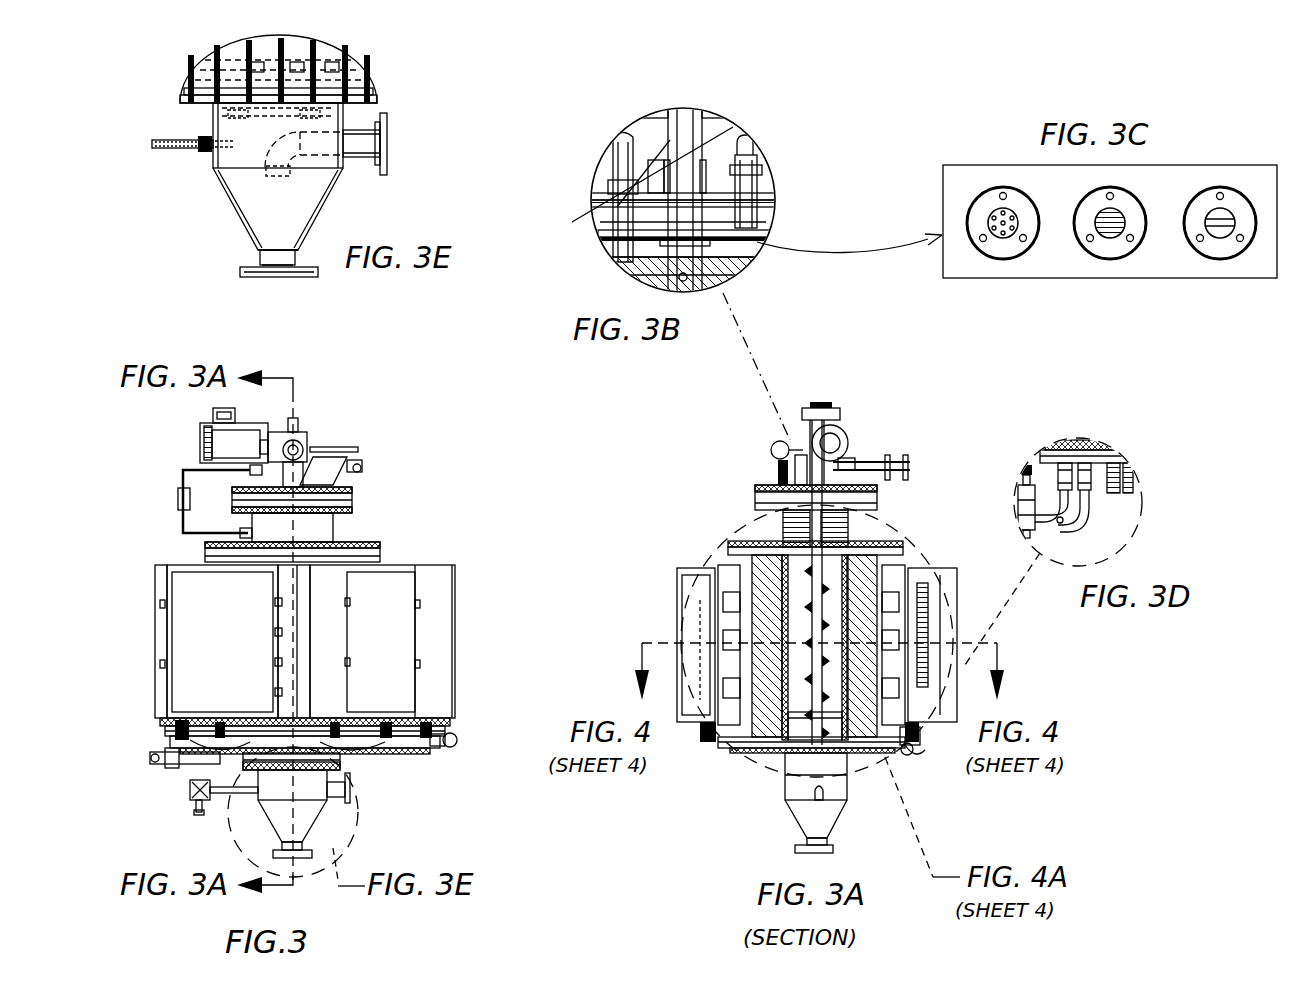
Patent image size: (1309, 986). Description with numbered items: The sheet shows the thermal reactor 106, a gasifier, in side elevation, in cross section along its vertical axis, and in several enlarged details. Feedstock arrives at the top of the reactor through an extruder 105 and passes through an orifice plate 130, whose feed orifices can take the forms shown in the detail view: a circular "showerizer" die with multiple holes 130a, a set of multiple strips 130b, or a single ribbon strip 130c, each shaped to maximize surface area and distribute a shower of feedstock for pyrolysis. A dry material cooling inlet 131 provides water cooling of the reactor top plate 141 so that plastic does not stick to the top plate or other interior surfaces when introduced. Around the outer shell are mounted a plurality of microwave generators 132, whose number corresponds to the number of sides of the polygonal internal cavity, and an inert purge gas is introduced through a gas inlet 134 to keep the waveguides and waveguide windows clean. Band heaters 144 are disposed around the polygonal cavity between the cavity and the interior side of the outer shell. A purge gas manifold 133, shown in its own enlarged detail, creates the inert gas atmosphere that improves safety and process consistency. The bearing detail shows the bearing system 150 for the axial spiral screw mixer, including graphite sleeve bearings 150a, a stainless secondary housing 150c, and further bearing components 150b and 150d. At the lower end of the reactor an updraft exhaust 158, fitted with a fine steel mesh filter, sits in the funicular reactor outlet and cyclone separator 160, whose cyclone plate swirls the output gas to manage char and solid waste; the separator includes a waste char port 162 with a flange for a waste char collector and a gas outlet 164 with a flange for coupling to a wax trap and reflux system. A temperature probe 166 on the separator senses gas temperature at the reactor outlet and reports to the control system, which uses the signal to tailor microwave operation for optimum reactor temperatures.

In FIG. 3, the extruder 105 is at (340, 460).
In FIG. 3A, the extruder 105 is at (787, 478).
In FIG. 3, the thermal reactor 106 is at (458, 447).
In FIG. 3A, the thermal reactor 106 is at (1028, 799).
In FIG. 3B, the orifice plate 130 is at (723, 243).
In FIG. 3C, the orifice plate 130 is at (1073, 280).
In FIG. 3C, the circular die with multiple holes 130a is at (989, 258).
In FIG. 3C, the multiple strips 130b is at (1118, 190).
In FIG. 3C, the ribbon strip 130c is at (1225, 258).
In FIG. 3A, the dry material cooling inlet 131 is at (785, 524).
In FIG. 3, the microwave generators 132 is at (227, 702).
In FIG. 3A, the microwave generators 132 is at (700, 582).
In FIG. 3A, the purge gas manifold 133 is at (920, 753).
In FIG. 3D, the purge gas manifold 133 is at (1087, 517).
In FIG. 3, the gas inlet 134 is at (247, 537).
In FIG. 3A, the reactor top plate 141 is at (900, 538).
In FIG. 3A, the band heaters 144 is at (708, 617).
In FIG. 3B, the bearing system 150 is at (585, 220).
In FIG. 3B, the graphite sleeve bearings 150a is at (757, 141).
In FIG. 3B, the second sensor 150b is at (667, 224).
In FIG. 3B, the stainless secondary housing 150c is at (703, 139).
In FIG. 3B, the fourth sensor 150d is at (670, 139).
In FIG. 3E, the updraft exhaust 158 is at (277, 177).
In FIG. 3E, the funicular reactor outlet and cyclone separator 160 is at (315, 212).
In FIG. 3, the funicular reactor outlet and cyclone separator 160 is at (313, 823).
In FIG. 3A, the funicular reactor outlet and cyclone separator 160 is at (797, 822).
In FIG. 3E, the waste char port 162 is at (258, 262).
In FIG. 3A, the waste char port 162 is at (830, 848).
In FIG. 3E, the gas outlet 164 is at (387, 113).
In FIG. 3E, the temperature probe 166 is at (188, 150).
In FIG. 3, the temperature probe 166 is at (200, 818).
In FIG. 3A, the temperature probe 166 is at (812, 793).